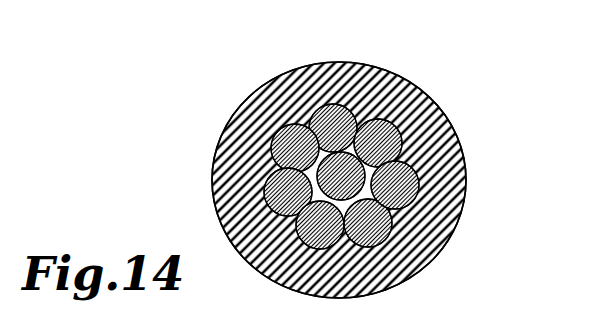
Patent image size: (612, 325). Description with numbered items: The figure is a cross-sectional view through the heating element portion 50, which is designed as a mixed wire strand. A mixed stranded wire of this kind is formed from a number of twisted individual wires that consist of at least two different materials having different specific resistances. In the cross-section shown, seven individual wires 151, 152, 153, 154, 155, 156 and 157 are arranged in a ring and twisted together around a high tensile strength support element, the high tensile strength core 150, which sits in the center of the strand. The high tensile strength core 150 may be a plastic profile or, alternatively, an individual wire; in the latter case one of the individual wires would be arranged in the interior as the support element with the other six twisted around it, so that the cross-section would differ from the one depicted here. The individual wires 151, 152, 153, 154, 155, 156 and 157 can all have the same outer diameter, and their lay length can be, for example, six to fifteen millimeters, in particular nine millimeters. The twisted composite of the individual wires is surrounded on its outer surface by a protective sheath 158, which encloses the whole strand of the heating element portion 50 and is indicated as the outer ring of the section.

The heating element portion 50 is at (216, 100).
The high tensile strength core 150 is at (352, 173).
The individual wire 151 is at (331, 124).
The individual wire 152 is at (382, 140).
The individual wire 153 is at (401, 189).
The individual wire 154 is at (375, 226).
The individual wire 155 is at (312, 231).
The individual wire 156 is at (278, 193).
The individual wire 157 is at (300, 150).
The protective sheath 158 is at (464, 154).